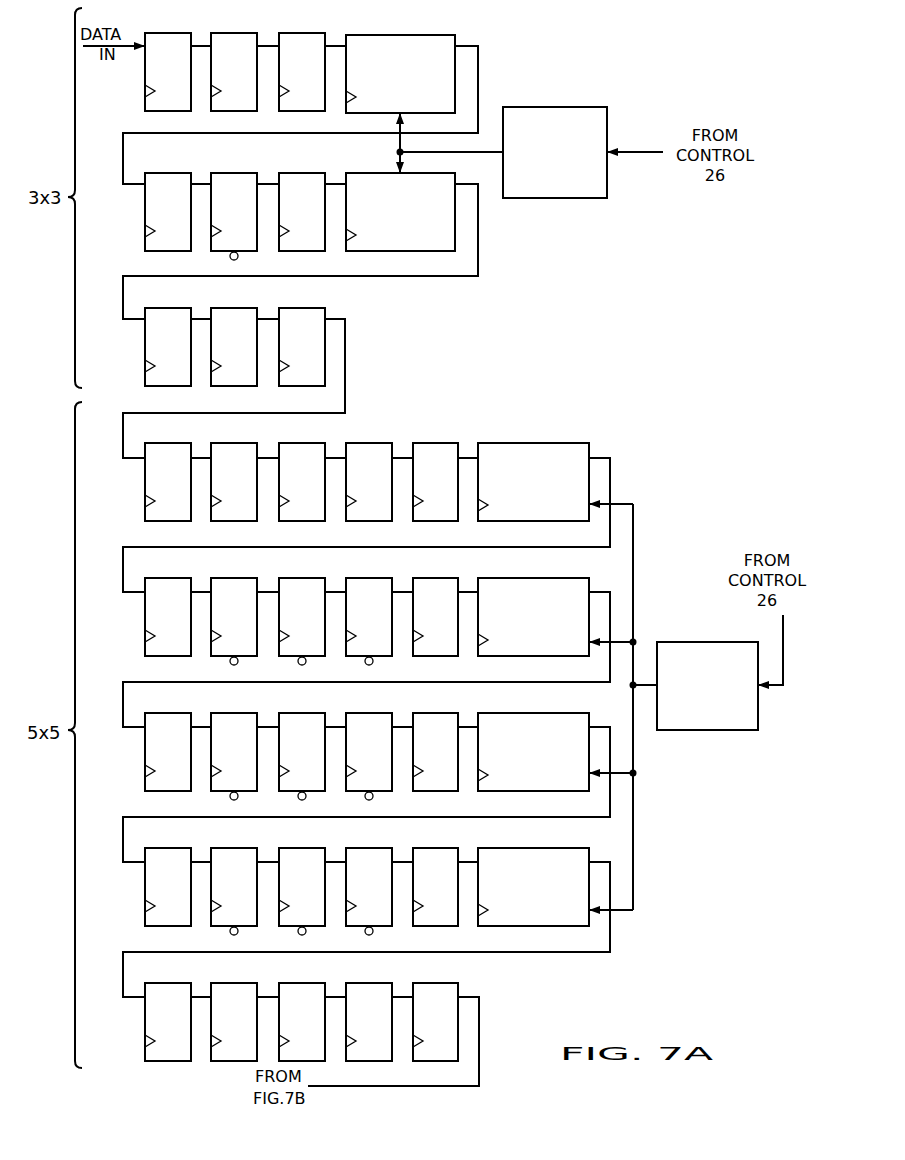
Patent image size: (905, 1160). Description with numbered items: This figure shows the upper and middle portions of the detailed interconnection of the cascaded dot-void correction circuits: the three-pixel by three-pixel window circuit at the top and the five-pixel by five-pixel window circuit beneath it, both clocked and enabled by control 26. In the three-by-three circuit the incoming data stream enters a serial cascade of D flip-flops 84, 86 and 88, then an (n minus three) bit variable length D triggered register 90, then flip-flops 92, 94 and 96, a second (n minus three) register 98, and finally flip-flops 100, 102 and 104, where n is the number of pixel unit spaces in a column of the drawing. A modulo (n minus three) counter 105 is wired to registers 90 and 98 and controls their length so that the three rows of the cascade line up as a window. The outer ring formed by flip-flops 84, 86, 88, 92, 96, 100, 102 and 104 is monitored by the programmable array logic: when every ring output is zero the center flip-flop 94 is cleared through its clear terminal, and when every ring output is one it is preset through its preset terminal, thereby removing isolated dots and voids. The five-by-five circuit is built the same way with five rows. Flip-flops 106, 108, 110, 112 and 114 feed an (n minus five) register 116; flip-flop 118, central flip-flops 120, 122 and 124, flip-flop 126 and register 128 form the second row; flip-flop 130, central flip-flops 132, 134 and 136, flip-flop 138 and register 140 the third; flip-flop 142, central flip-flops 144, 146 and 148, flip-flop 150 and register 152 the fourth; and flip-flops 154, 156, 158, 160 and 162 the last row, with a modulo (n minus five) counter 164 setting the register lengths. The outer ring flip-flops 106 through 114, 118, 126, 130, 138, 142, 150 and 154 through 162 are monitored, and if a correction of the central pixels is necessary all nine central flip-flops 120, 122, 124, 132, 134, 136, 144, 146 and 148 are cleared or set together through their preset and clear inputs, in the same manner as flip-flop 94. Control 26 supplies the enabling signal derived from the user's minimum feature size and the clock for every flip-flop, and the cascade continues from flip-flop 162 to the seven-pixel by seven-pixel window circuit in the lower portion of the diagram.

The D flip-flop 84 is at (187, 33).
The D flip-flop 86 is at (253, 33).
The D flip-flop 88 is at (321, 33).
The (n−3) bit variable length D triggered register 90 is at (404, 35).
The D flip-flop 92 is at (187, 173).
The center flip-flop 94 is at (253, 173).
The D flip-flop 96 is at (321, 173).
The (n−3) bit variable length D triggered register 98 is at (391, 173).
The D flip-flop 100 is at (187, 308).
The D flip-flop 102 is at (253, 308).
The D flip-flop 104 is at (321, 308).
The modulo (n-3) counter 105 is at (566, 107).
The outer ring flip-flop 106 is at (187, 443).
The outer ring flip-flop 108 is at (253, 443).
The outer ring flip-flop 110 is at (321, 443).
The outer ring flip-flop 112 is at (388, 443).
The outer ring flip-flop 114 is at (455, 443).
The (n-5) register 116 is at (530, 443).
The outer ring flip-flop 118 is at (187, 578).
The central flip-flop 120 is at (253, 578).
The central flip-flop 122 is at (321, 578).
The central flip-flop 124 is at (388, 578).
The outer ring flip-flop 126 is at (455, 578).
The (n-5) register 128 is at (530, 578).
The outer ring flip-flop 130 is at (187, 713).
The central flip-flop 132 is at (253, 713).
The central flip-flop 134 is at (321, 713).
The central flip-flop 136 is at (388, 713).
The outer ring flip-flop 138 is at (455, 713).
The (n-5) register 140 is at (530, 713).
The outer ring flip-flop 142 is at (187, 848).
The central flip-flop 144 is at (253, 848).
The central flip-flop 146 is at (321, 848).
The central flip-flop 148 is at (388, 848).
The outer ring flip-flop 150 is at (455, 848).
The (n-5) register 152 is at (530, 848).
The outer ring flip-flop 154 is at (187, 983).
The outer ring flip-flop 156 is at (253, 983).
The outer ring flip-flop 158 is at (321, 983).
The outer ring flip-flop 160 is at (388, 983).
The outer ring flip-flop 162 is at (455, 983).
The modulo (n-5) counter 164 is at (712, 642).
The control 26 is at (767, 600).